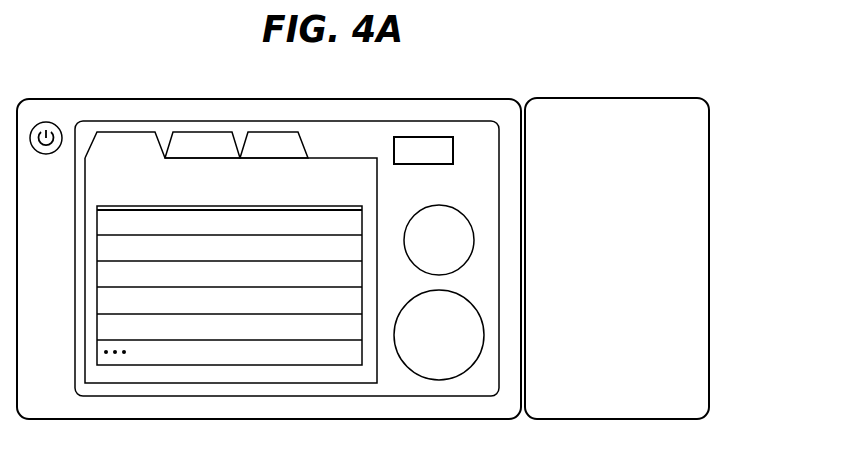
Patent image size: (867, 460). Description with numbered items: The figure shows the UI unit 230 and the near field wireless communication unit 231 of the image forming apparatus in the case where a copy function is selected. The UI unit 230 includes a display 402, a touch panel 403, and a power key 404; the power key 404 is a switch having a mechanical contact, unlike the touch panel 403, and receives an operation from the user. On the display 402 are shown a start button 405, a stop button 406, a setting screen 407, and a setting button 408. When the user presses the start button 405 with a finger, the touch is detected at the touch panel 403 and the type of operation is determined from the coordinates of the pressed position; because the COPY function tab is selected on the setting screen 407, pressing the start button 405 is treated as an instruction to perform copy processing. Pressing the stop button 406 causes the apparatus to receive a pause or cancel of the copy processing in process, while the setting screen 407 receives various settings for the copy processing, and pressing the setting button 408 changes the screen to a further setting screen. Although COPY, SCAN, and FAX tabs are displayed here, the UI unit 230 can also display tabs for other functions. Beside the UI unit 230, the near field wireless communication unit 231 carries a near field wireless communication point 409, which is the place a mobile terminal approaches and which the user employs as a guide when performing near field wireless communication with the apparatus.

The UI unit 230 is at (368, 99).
The near field wireless communication unit 231 is at (610, 98).
The display 402 is at (167, 121).
The touch panel 403 is at (228, 132).
The power key 404 is at (48, 122).
The start button 405 is at (436, 380).
The stop button 406 is at (447, 205).
The setting screen 407 is at (273, 365).
The setting button 408 is at (432, 136).
The near field wireless communication point 409 is at (633, 287).